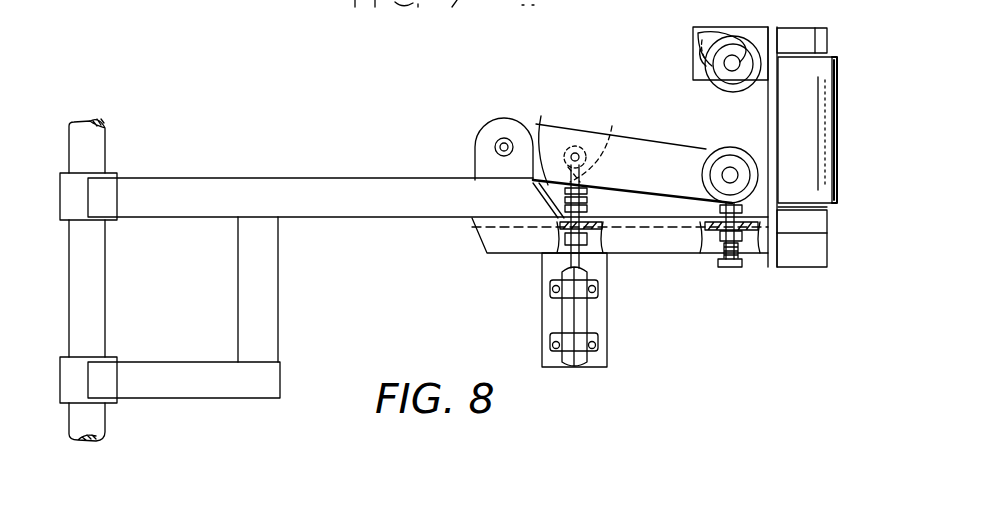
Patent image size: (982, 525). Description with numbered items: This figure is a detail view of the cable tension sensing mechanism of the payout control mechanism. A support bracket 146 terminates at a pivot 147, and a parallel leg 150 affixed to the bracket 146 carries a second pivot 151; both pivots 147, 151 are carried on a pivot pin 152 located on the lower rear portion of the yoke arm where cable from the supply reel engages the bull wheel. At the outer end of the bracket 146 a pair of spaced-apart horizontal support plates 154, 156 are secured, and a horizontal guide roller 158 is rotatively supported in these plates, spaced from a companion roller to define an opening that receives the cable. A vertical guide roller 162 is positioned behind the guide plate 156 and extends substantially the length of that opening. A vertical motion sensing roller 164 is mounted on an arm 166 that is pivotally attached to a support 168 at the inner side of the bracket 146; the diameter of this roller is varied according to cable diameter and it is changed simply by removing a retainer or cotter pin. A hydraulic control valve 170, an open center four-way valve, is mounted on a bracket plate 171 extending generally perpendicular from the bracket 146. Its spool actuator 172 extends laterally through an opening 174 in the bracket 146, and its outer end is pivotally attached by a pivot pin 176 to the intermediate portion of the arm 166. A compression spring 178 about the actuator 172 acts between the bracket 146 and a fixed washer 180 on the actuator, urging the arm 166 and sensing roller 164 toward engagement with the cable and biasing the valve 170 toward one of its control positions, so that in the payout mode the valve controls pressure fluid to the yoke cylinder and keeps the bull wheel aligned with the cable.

The support bracket 146 is at (217, 200).
The pivot 147 is at (77, 185).
The parallel leg 150 is at (185, 377).
The pivot 151 is at (77, 367).
The pivot pin 152 is at (82, 303).
The horizontal support plate 154 is at (800, 222).
The horizontal support plate 156 is at (808, 40).
The horizontal guide roller 158 is at (823, 147).
The vertical guide roller 162 is at (748, 50).
The vertical motion sensing roller 164 is at (740, 150).
The arm 166 is at (667, 153).
The support 168 is at (488, 142).
The hydraulic control valve 170 is at (587, 322).
The bracket plate 171 is at (610, 300).
The spool actuator 172 is at (604, 144).
The opening 174 is at (546, 124).
The pivot pin 176 is at (575, 150).
The compression spring 178 is at (587, 208).
The fixed washer 180 is at (587, 191).